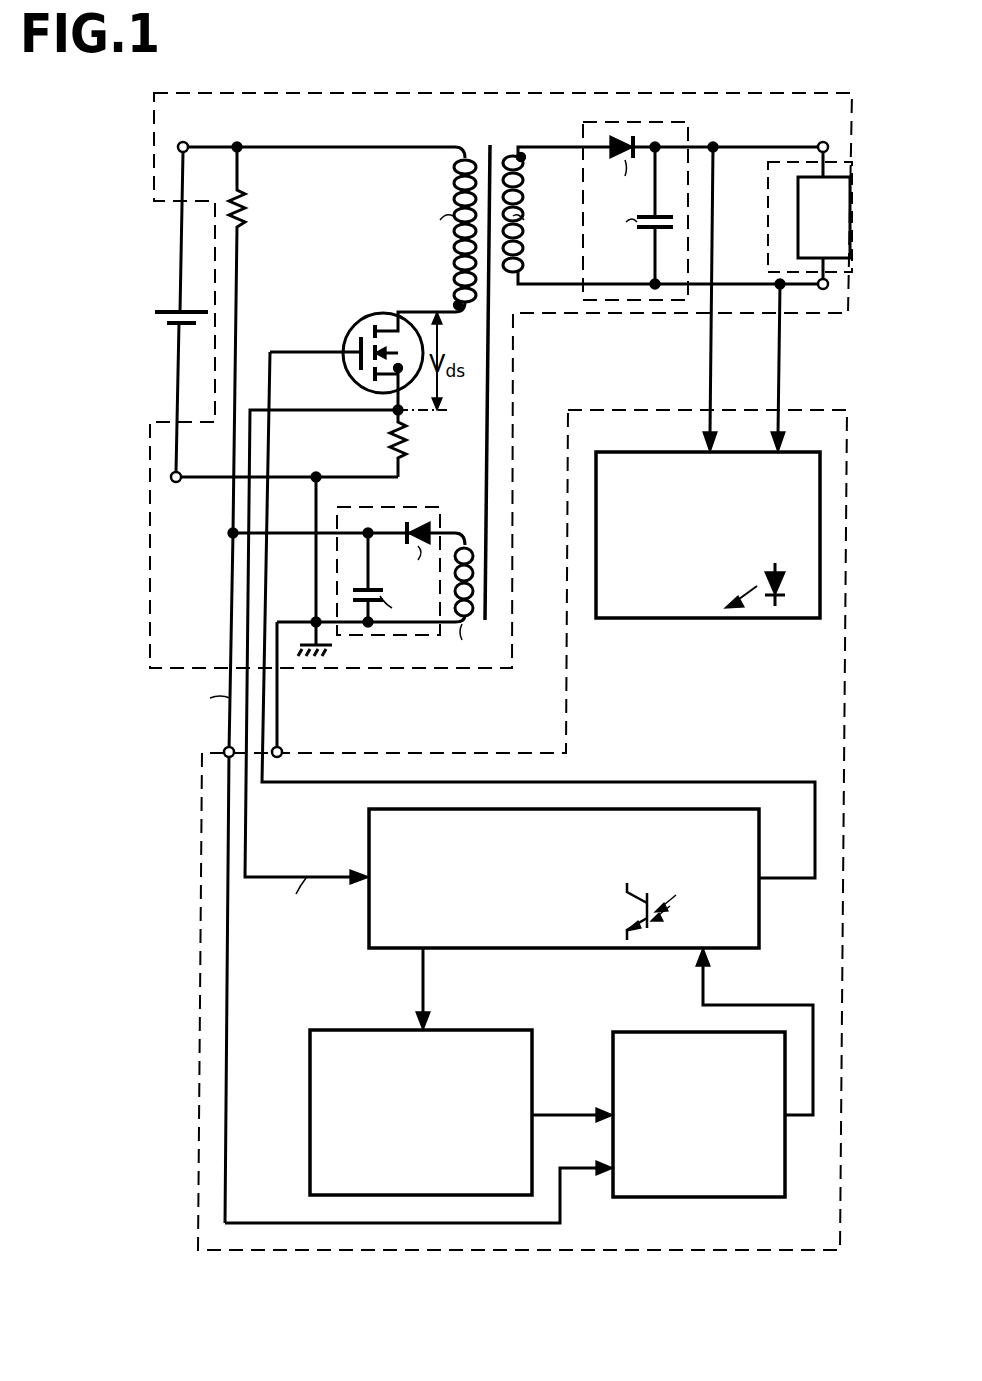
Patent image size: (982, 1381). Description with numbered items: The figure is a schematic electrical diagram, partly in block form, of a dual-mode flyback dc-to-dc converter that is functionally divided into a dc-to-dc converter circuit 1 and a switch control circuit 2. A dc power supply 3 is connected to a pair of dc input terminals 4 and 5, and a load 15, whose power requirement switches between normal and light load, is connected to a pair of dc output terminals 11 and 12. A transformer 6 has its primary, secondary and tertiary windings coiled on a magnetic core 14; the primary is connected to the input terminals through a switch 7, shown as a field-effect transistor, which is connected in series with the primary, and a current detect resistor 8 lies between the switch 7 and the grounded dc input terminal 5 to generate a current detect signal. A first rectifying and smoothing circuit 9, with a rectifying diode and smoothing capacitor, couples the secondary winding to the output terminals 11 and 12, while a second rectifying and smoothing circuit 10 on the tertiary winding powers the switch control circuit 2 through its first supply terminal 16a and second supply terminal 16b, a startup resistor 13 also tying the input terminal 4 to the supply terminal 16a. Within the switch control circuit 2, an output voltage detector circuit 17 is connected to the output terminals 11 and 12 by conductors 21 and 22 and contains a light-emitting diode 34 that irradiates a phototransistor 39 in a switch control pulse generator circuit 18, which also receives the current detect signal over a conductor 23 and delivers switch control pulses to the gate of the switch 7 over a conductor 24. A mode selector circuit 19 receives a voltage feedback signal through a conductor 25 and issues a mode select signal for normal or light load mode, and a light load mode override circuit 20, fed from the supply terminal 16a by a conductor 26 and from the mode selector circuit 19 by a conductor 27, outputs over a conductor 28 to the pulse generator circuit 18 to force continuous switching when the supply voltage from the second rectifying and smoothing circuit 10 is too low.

The dc-to-dc converter circuit 1 is at (570, 318).
The switch control circuit 2 is at (805, 410).
The dc power supply 3 is at (170, 311).
The dc input terminal 4 is at (183, 141).
The dc input terminal 5 is at (176, 483).
The transformer 6 is at (497, 152).
The switch 7 is at (372, 316).
The current detect resistor 8 is at (390, 444).
The first rectifying and smoothing circuit 9 is at (690, 136).
The second rectifying and smoothing circuit 10 is at (394, 508).
The dc output terminal 11 is at (823, 141).
The dc output terminal 12 is at (823, 290).
The startup resistor 13 is at (246, 206).
The magnetic core 14 is at (485, 444).
The load 15 is at (850, 214).
The first supply terminal 16a is at (226, 750).
The second supply terminal 16b is at (280, 750).
The output voltage detector circuit 17 is at (718, 620).
The switch control pulse generator circuit 18 is at (760, 916).
The mode selector circuit 19 is at (484, 1028).
The light load mode override circuit 20 is at (640, 1028).
The conductor 21 is at (706, 352).
The conductor 22 is at (776, 352).
The conductor 23 is at (277, 876).
The conductor 24 is at (620, 781).
The conductor 25 is at (422, 990).
The conductor 26 is at (232, 1002).
The conductor 27 is at (568, 1113).
The conductor 28 is at (706, 988).
The light-emitting diode 34 is at (764, 584).
The phototransistor 39 is at (626, 914).